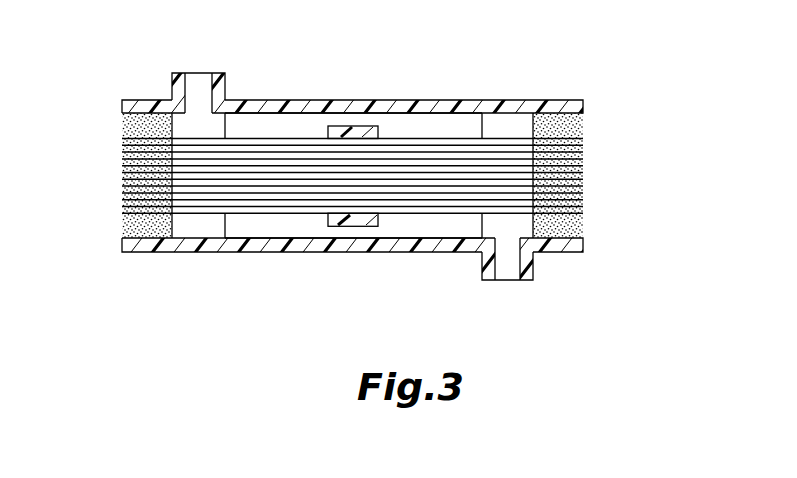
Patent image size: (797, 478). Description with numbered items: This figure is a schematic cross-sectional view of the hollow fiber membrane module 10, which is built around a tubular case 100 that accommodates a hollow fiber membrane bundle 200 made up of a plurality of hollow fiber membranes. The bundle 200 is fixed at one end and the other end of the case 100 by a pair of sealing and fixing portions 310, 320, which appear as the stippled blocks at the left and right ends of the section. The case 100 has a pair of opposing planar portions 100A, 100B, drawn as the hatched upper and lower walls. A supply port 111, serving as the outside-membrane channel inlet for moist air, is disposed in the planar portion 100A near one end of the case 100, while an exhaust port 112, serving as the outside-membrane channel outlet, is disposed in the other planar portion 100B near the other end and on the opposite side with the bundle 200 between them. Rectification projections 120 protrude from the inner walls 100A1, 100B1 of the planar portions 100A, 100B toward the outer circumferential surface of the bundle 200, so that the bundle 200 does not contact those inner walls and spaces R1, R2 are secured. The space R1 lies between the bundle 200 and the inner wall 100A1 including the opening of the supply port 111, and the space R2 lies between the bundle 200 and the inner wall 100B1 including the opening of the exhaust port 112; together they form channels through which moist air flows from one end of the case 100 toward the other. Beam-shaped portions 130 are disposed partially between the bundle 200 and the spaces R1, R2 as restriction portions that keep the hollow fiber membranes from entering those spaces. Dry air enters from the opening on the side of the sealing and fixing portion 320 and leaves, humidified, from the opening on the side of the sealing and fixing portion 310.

The hollow fiber membrane module 10 is at (635, 75).
The case 100 is at (430, 88).
The planar portion 100A is at (492, 107).
The inner wall of planar portion 100A1 is at (240, 116).
The planar portion 100B is at (398, 245).
The inner wall of planar portion 100B1 is at (238, 240).
The supply port 111 is at (168, 96).
The exhaust port 112 is at (537, 258).
The rectification projection 120 is at (303, 125).
The beam-shaped portion 130 is at (357, 130).
The hollow fiber membrane bundle 200 is at (272, 196).
The sealing and fixing portion 310 is at (135, 228).
The sealing and fixing portion 320 is at (565, 228).
The space R1 is at (273, 125).
The space R2 is at (308, 223).